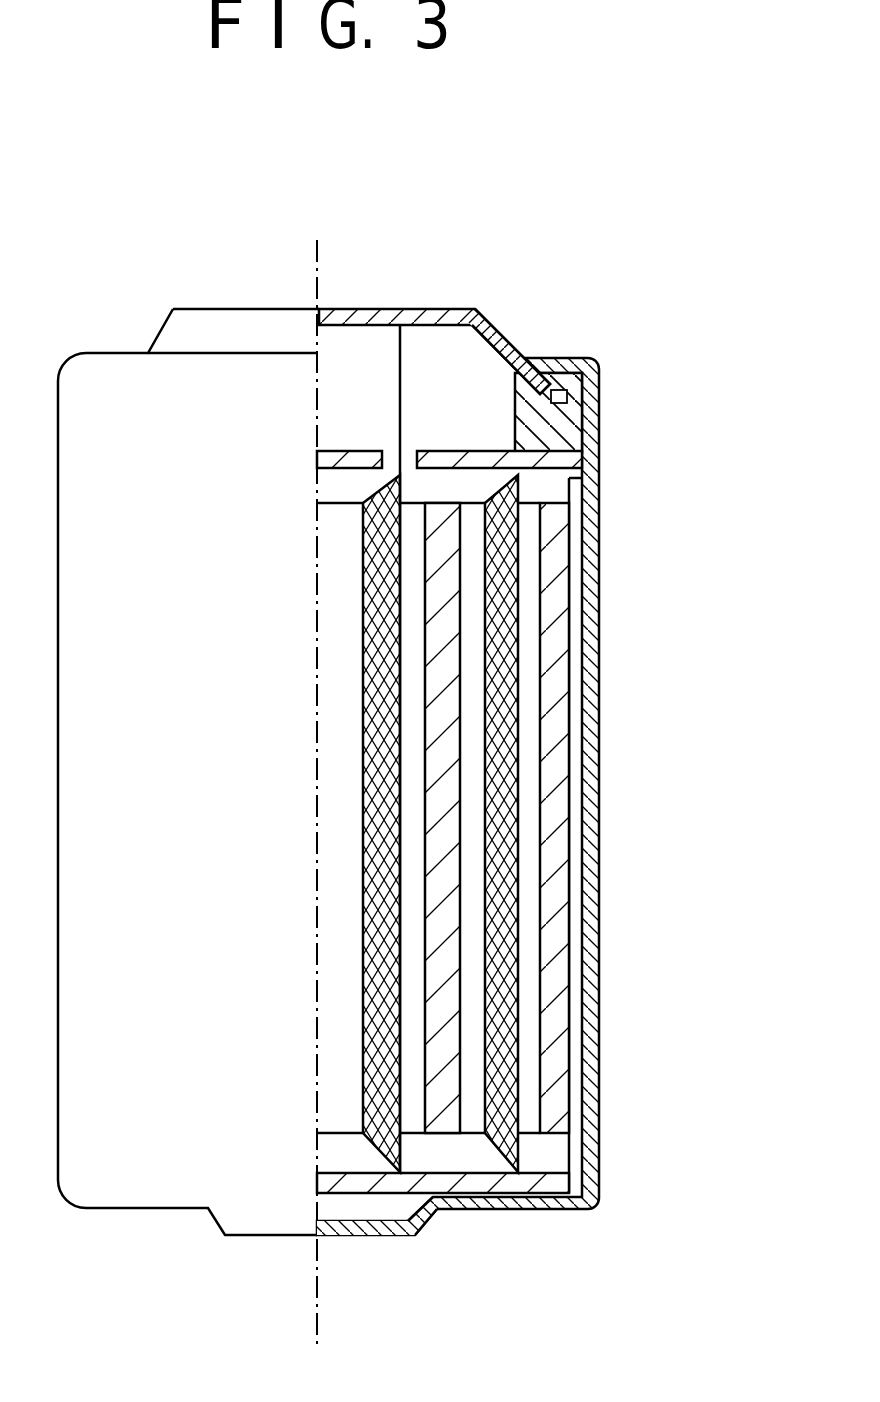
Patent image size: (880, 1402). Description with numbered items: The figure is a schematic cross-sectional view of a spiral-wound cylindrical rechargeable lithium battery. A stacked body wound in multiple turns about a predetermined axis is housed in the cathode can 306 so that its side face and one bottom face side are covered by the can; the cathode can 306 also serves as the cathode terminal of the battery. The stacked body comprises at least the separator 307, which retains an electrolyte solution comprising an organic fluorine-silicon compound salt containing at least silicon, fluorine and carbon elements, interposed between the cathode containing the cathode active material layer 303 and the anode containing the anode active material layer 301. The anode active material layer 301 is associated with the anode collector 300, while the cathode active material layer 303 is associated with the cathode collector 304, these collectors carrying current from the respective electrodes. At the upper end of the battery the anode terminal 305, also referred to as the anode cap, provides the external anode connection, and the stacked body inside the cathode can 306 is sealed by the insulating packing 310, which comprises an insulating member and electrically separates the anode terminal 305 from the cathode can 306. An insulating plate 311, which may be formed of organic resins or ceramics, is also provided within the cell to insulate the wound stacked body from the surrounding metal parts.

The anode collector 300 is at (403, 378).
The anode active material layer 301 is at (517, 657).
The cathode active material layer 303 is at (553, 1036).
The cathode collector 304 is at (577, 855).
The anode terminal 305 is at (422, 310).
The cathode can 306 is at (423, 1218).
The separator 307 is at (527, 758).
The insulating packing 310 is at (578, 427).
The insulating plate 311 is at (583, 470).